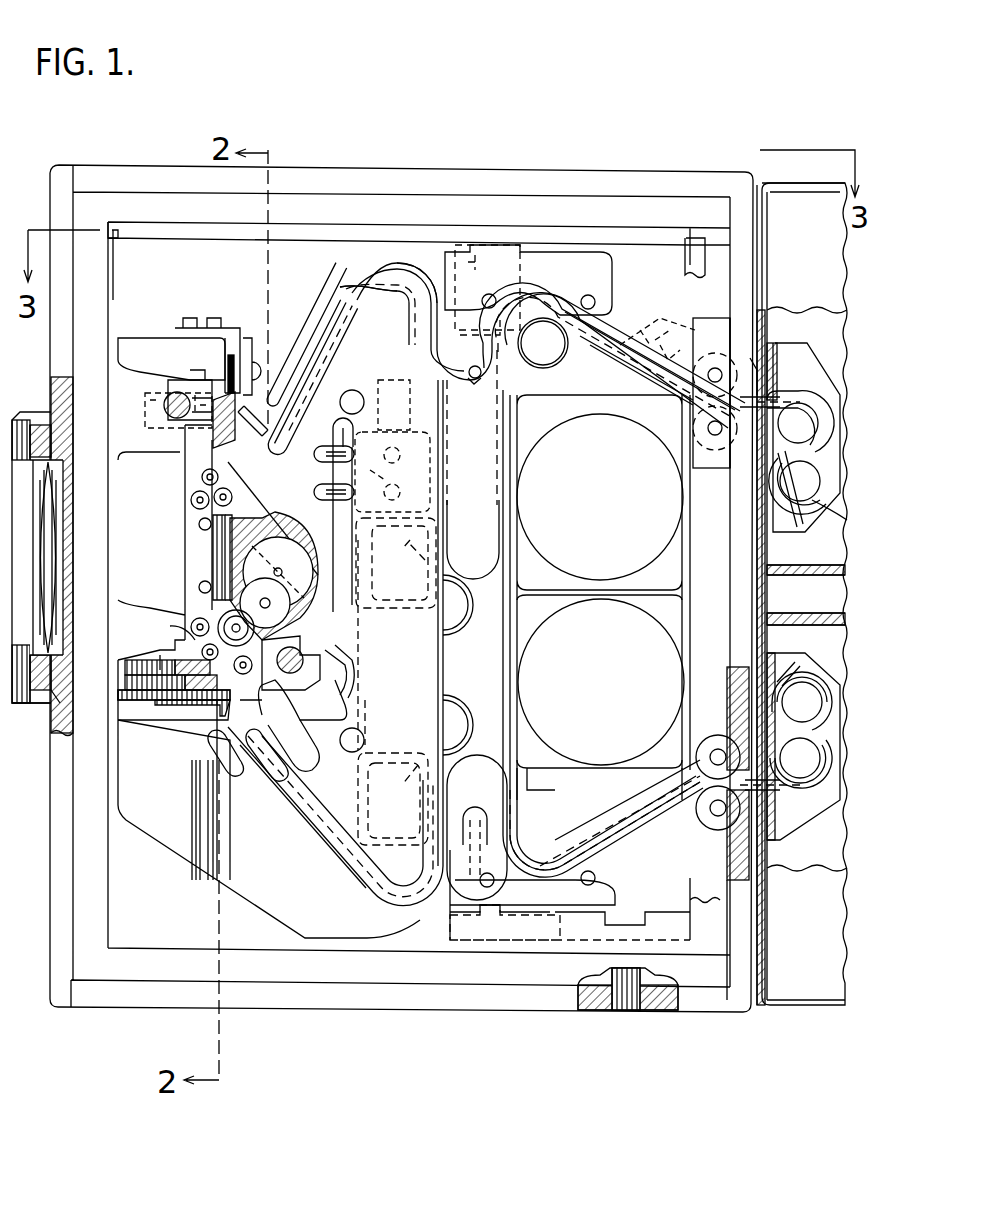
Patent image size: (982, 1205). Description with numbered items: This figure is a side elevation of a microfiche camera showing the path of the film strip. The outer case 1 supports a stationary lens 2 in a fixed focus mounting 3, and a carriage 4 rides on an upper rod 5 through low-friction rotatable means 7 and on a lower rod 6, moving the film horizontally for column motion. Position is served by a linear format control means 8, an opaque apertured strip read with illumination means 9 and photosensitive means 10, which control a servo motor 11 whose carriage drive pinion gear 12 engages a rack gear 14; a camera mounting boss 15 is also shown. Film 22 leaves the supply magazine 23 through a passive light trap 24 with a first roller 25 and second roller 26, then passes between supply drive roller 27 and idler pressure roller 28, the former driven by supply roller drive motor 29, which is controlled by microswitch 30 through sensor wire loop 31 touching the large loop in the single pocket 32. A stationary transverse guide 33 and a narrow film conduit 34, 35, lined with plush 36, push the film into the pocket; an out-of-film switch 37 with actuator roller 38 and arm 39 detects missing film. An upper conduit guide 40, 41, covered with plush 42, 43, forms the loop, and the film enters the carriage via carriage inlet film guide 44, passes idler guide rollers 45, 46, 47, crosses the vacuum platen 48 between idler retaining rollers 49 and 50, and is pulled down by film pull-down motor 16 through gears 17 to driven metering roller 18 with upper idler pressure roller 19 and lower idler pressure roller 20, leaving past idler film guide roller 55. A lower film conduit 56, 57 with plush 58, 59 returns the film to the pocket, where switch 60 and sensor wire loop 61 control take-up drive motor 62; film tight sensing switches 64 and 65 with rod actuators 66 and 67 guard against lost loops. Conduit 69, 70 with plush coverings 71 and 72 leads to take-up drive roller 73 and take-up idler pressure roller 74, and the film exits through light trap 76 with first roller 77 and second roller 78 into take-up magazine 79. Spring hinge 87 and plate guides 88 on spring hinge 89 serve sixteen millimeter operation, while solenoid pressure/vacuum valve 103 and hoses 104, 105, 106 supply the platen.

The outer case 1 is at (52, 822).
The stationary lens 2 is at (56, 559).
The fixed focus mounting 3 is at (40, 703).
The carriage 4 is at (196, 458).
The upper rod 5 is at (172, 402).
The lower rod 6 is at (296, 672).
The low-friction rotatable means 7 is at (144, 405).
The linear format control means 8 is at (207, 355).
The illumination means 9 is at (173, 367).
The photosensitive means 10 is at (254, 360).
The servo motor 11 is at (165, 788).
The carriage drive pinion gear 12 is at (140, 668).
The rack gear 14 is at (196, 655).
The camera mounting boss 15 is at (645, 1008).
The film pull-down motor 16 is at (282, 572).
The gears 17 is at (283, 638).
The driven metering roller 18 is at (214, 620).
The upper idler pressure roller 19 is at (190, 624).
The lower idler pressure roller 20 is at (172, 626).
The film 22 is at (498, 514).
The supply magazine 23 is at (823, 184).
The passive light trap 24 is at (806, 459).
The first roller 25 is at (813, 494).
The second roller 26 is at (811, 436).
The supply drive roller 27 is at (735, 444).
The idler pressure roller 28 is at (752, 360).
The supply roller drive motor 29 is at (613, 504).
The microswitch 30 is at (418, 595).
The sensor wire loop 31 is at (452, 620).
The single pocket 32 is at (500, 670).
The stationary transverse guide 33 is at (538, 380).
The film conduit 34 is at (650, 392).
The film conduit 35 is at (685, 378).
The plush 36 is at (605, 352).
The out-of-film switch 37 is at (688, 312).
The actuator roller 38 is at (660, 322).
The arm 39 is at (668, 340).
The upper conduit guide 40 is at (474, 386).
The upper conduit guide 41 is at (417, 262).
The plush 42 is at (352, 312).
The plush 43 is at (333, 318).
The carriage inlet film guide 44 is at (270, 444).
The idler guide roller 45 is at (200, 475).
The idler guide roller 46 is at (239, 493).
The idler guide roller 47 is at (190, 501).
The vacuum platen 48 is at (208, 548).
The idler retaining roller 49 is at (198, 524).
The idler retaining roller 50 is at (198, 588).
The idler film guide roller 55 is at (260, 672).
The lower film conduit 56 is at (293, 818).
The lower film conduit 57 is at (347, 798).
The plush 58 is at (255, 760).
The plush 59 is at (278, 750).
The switch 60 is at (414, 818).
The sensor wire loop 61 is at (455, 718).
The take-up drive motor 62 is at (613, 694).
The film tight sensing switch 64 is at (512, 262).
The film tight sensing switch 65 is at (516, 924).
The rod actuator 66 is at (474, 403).
The rod actuator 67 is at (474, 808).
The conduit 69 is at (604, 827).
The conduit 70 is at (661, 858).
The plush covering 71 is at (552, 862).
The plush covering 72 is at (605, 845).
The take-up drive roller 73 is at (716, 738).
The take-up idler pressure roller 74 is at (718, 832).
The light trap 76 is at (795, 798).
The first roller 77 is at (813, 771).
The second roller 78 is at (813, 715).
The take-up magazine 79 is at (805, 1002).
The spring hinge 87 is at (578, 307).
The plate guides 88 is at (680, 882).
The spring hinge 89 is at (583, 908).
The solenoid pressure/vacuum valve 103 is at (379, 405).
The hose 104 is at (392, 472).
The hose 105 is at (320, 492).
The hose 106 is at (338, 698).